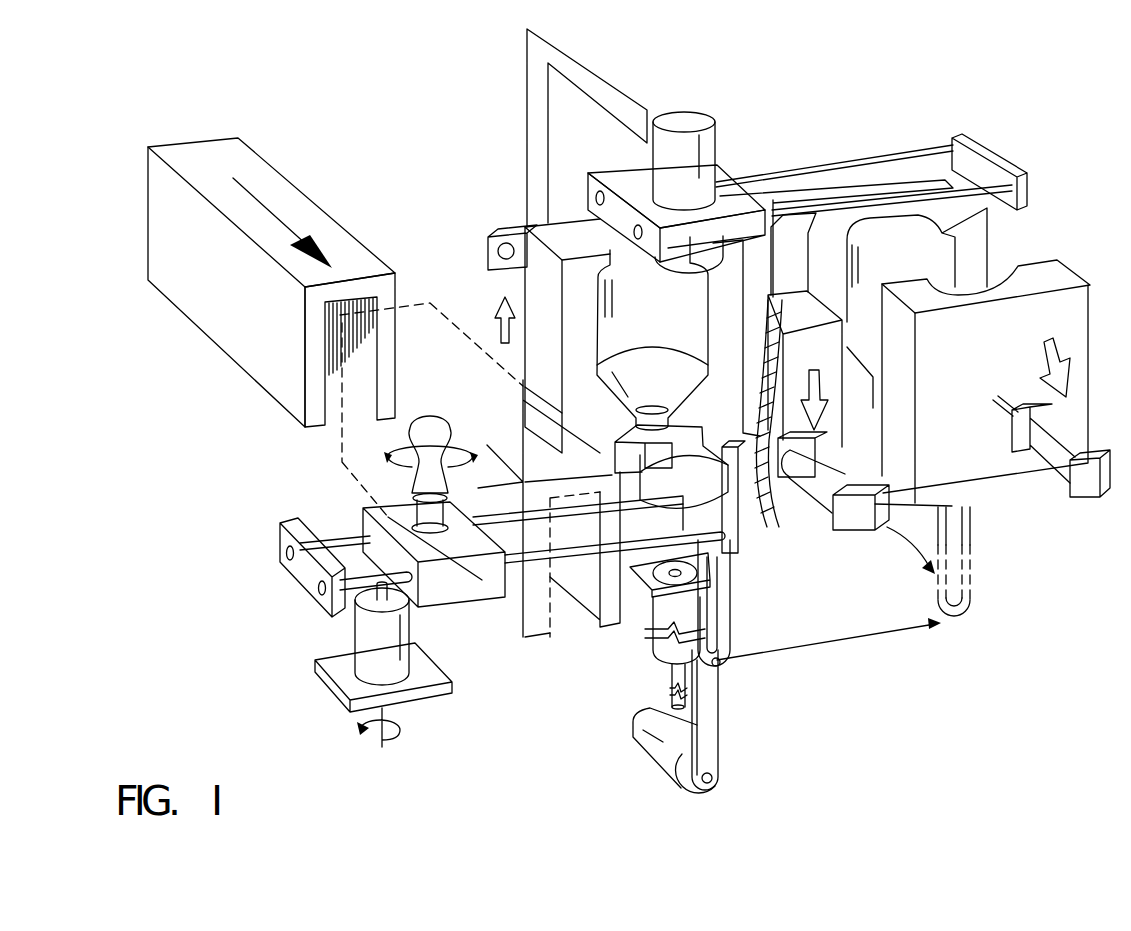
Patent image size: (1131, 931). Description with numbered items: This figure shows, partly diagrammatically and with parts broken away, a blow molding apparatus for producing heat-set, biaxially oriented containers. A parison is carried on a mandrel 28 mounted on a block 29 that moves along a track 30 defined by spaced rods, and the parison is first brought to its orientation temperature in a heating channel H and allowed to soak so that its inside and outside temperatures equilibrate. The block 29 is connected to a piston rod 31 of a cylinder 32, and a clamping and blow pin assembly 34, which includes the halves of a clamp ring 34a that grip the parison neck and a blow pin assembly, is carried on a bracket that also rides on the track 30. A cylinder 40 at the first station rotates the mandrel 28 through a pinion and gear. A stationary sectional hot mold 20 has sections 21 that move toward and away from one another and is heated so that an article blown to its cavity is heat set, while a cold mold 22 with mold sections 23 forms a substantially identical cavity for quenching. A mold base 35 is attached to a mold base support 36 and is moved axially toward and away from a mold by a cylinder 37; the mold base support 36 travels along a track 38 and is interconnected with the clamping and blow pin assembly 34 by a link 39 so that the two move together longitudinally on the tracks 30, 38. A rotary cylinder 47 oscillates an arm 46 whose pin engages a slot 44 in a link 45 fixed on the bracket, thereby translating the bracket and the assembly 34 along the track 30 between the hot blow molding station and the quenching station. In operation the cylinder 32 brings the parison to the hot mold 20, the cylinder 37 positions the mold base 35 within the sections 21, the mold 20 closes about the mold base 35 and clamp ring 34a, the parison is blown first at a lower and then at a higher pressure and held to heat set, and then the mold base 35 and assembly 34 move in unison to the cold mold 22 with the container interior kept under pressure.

The heating channel H is at (243, 335).
The stationary sectional hot mold 20 is at (540, 212).
The mold sections 21 is at (523, 400).
The cold mold 22 is at (1003, 226).
The mold sections 23 is at (926, 261).
The mandrel 28 is at (413, 524).
The block 29 is at (450, 592).
The track 30 is at (282, 532).
The piston rod 31 is at (522, 520).
The cylinder 32 is at (896, 528).
The clamping and blow pin assembly 34 is at (645, 610).
The clamp ring 34a is at (620, 445).
The mold base 35 is at (718, 246).
The mold base support 36 is at (638, 187).
The cylinder 37 is at (699, 118).
The track 38 is at (861, 169).
The link 39 is at (546, 68).
The cylinder 40 is at (360, 626).
The slot 44 is at (710, 602).
The link 45 is at (718, 664).
The arm 46 is at (711, 743).
The rotary cylinder 47 is at (633, 737).